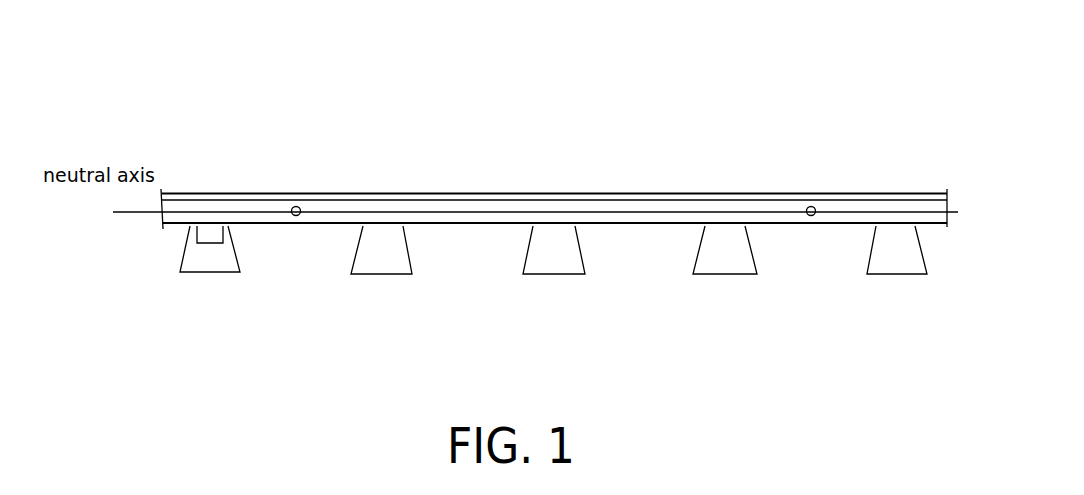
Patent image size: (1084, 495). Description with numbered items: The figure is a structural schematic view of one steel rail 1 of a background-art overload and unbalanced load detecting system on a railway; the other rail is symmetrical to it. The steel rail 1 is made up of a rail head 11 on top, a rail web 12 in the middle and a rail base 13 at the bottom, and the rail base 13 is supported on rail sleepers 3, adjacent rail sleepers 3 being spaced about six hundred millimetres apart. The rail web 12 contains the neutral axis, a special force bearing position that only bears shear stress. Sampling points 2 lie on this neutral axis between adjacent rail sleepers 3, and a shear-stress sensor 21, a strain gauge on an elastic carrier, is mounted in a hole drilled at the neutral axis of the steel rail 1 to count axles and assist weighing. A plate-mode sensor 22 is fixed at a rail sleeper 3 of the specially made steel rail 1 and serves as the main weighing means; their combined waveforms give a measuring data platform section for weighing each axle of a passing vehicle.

The steel rail 1 is at (732, 81).
The rail head 11 is at (603, 197).
The rail web 12 is at (660, 215).
The rail base 13 is at (452, 225).
The sampling point 2 is at (813, 206).
The shear-stress sensor 21 is at (298, 206).
The plate-mode sensor 22 is at (210, 243).
The rail sleeper 3 is at (540, 272).